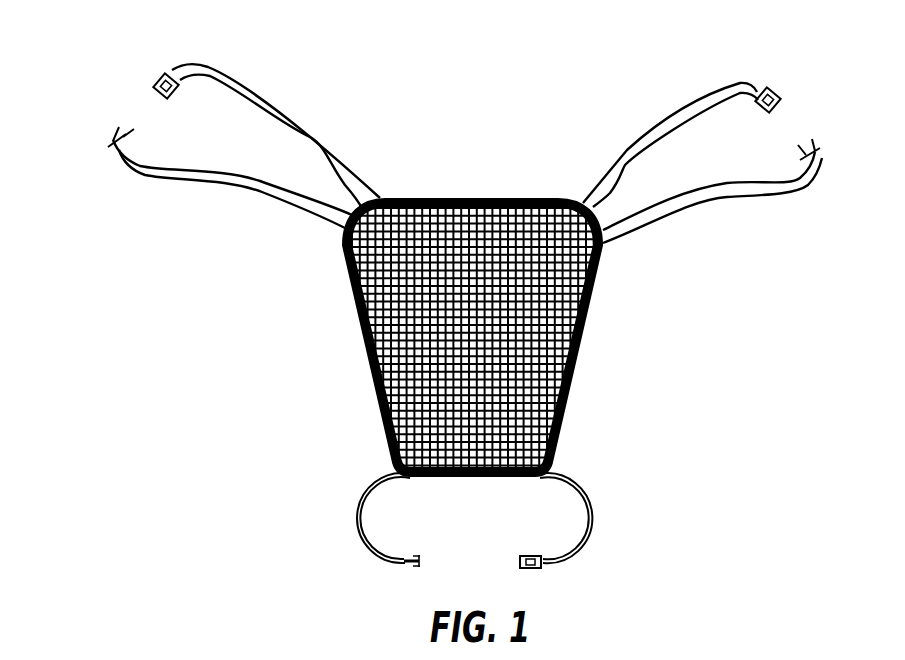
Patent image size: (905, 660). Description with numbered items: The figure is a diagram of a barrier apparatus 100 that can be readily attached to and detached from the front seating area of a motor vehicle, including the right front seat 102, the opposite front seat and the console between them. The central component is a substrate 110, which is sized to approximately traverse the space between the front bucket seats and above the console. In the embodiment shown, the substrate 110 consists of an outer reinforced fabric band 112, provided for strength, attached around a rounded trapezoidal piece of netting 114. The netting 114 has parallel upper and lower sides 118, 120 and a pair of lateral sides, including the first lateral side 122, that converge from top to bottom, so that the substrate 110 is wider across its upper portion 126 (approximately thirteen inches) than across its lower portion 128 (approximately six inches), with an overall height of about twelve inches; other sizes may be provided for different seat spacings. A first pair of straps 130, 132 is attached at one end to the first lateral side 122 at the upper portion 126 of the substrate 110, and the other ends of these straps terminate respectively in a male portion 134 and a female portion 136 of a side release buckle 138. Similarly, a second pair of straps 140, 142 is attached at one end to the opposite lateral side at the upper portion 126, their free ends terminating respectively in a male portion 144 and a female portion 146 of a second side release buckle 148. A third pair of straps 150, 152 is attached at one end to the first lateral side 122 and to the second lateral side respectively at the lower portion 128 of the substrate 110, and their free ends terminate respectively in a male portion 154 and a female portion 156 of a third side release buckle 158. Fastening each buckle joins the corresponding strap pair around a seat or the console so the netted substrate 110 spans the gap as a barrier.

The barrier apparatus 100 is at (477, 342).
The right front seat 102 is at (507, 337).
The substrate 110 is at (523, 380).
The outer reinforced fabric band 112 is at (582, 352).
The netting 114 is at (380, 306).
The upper side 118 is at (508, 197).
The lower side 120 is at (448, 481).
The first lateral side 122 is at (368, 362).
The upper portion 126 is at (340, 250).
The lower portion 128 is at (562, 447).
The first strap of first pair 130 is at (310, 134).
The second strap of first pair 132 is at (247, 185).
The male portion 134 is at (188, 70).
The female portion 136 is at (118, 152).
The side release buckle 138 is at (119, 74).
The first strap of second pair 140 is at (670, 130).
The second strap of second pair 142 is at (757, 195).
The male portion 144 is at (760, 90).
The female portion 146 is at (808, 180).
The side release buckle 148 is at (802, 120).
The first strap of third pair 150 is at (362, 510).
The second strap of third pair 152 is at (589, 523).
The male portion 154 is at (405, 562).
The female portion 156 is at (541, 562).
The side release buckle 158 is at (491, 550).